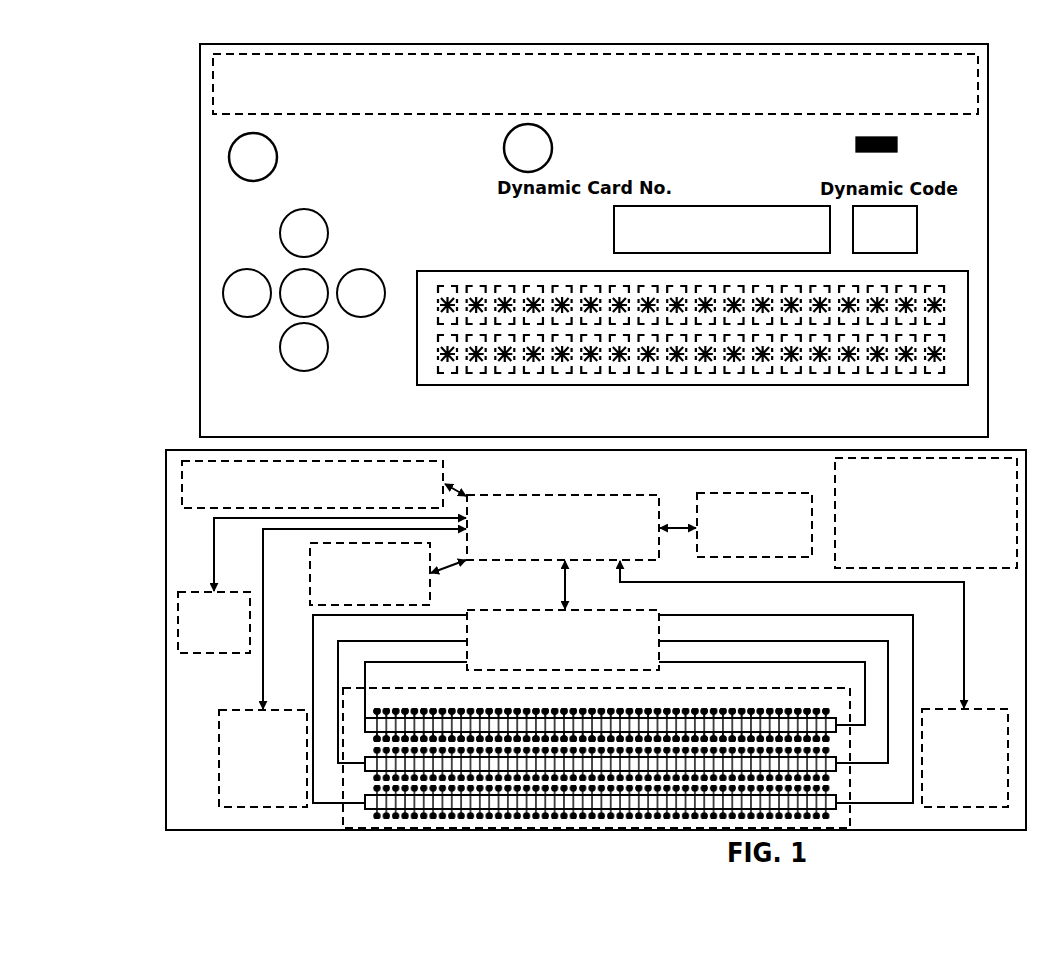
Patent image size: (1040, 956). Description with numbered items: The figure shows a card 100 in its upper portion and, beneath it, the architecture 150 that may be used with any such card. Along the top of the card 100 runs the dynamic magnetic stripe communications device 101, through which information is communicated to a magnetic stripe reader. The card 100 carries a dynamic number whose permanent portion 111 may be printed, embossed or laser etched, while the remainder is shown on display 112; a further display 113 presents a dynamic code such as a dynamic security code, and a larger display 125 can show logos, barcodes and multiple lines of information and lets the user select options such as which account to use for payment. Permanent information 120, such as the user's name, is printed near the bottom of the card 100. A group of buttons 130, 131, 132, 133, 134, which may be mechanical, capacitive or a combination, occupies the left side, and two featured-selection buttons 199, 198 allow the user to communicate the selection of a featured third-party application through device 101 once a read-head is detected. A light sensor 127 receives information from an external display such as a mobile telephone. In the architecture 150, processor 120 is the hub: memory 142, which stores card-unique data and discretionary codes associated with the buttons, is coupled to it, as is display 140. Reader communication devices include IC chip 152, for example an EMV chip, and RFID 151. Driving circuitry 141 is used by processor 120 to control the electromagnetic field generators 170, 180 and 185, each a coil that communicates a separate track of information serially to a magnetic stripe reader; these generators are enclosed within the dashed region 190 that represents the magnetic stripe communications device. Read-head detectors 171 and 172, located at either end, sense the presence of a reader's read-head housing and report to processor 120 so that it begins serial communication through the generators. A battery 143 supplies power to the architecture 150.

The card 100 is at (200, 236).
The dynamic magnetic stripe communications device 101 is at (216, 108).
The permanent portion 111 is at (550, 238).
The display 112 is at (668, 254).
The display 113 is at (892, 254).
The permanent information / processor 120 is at (254, 407).
The display 125 is at (962, 386).
The light sensor 127 is at (897, 140).
The button 130 is at (300, 270).
The button 131 is at (248, 269).
The button 132 is at (385, 291).
The button 133 is at (309, 211).
The button 134 is at (283, 341).
The display 140 is at (706, 493).
The driving circuitry 141 is at (515, 610).
The memory 142 is at (180, 474).
The battery 143 is at (1016, 566).
The architecture 150 is at (167, 634).
The RFID 151 is at (308, 567).
The IC chip 152 is at (212, 590).
The electromagnetic field generator 170 is at (492, 711).
The read-head detector 171 is at (256, 708).
The read-head detector 172 is at (930, 805).
The electromagnetic field generator 180 is at (365, 762).
The electromagnetic field generator 185 is at (365, 800).
The dynamic magnetic stripe communications device 190 is at (786, 688).
The button 198 is at (510, 133).
The button 199 is at (270, 139).